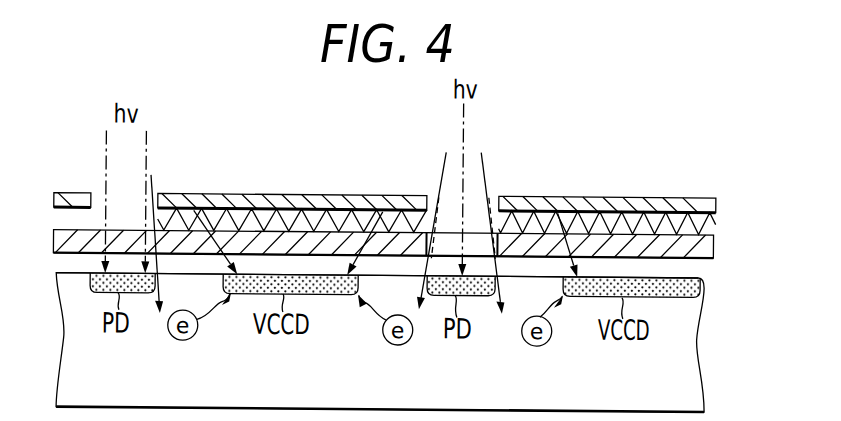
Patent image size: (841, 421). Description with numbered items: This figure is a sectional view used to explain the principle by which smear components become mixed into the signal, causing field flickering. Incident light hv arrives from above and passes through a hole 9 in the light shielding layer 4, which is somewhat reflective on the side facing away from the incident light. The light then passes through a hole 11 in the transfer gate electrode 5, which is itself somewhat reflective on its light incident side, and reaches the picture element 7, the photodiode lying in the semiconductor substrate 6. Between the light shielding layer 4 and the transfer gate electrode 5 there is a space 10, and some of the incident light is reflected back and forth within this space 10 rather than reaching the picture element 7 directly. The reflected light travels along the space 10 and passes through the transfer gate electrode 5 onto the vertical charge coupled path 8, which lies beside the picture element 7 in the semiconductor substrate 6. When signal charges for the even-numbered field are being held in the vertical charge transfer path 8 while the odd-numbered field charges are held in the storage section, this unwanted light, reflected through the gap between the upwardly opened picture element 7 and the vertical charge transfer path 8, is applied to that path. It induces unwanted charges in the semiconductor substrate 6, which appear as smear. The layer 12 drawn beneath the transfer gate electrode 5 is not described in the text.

The light shielding layer 4 is at (709, 203).
The transfer gate electrode 5 is at (712, 248).
The semiconductor substrate 6 is at (694, 337).
The picture element (PD) 7 is at (480, 295).
The vertical charge coupled path (VCCD) 8 is at (672, 296).
The hole in light shielding layer 9 is at (475, 207).
The space 10 is at (700, 222).
The hole in transfer gate electrode 11 is at (447, 183).
The insulating film 12 is at (700, 272).